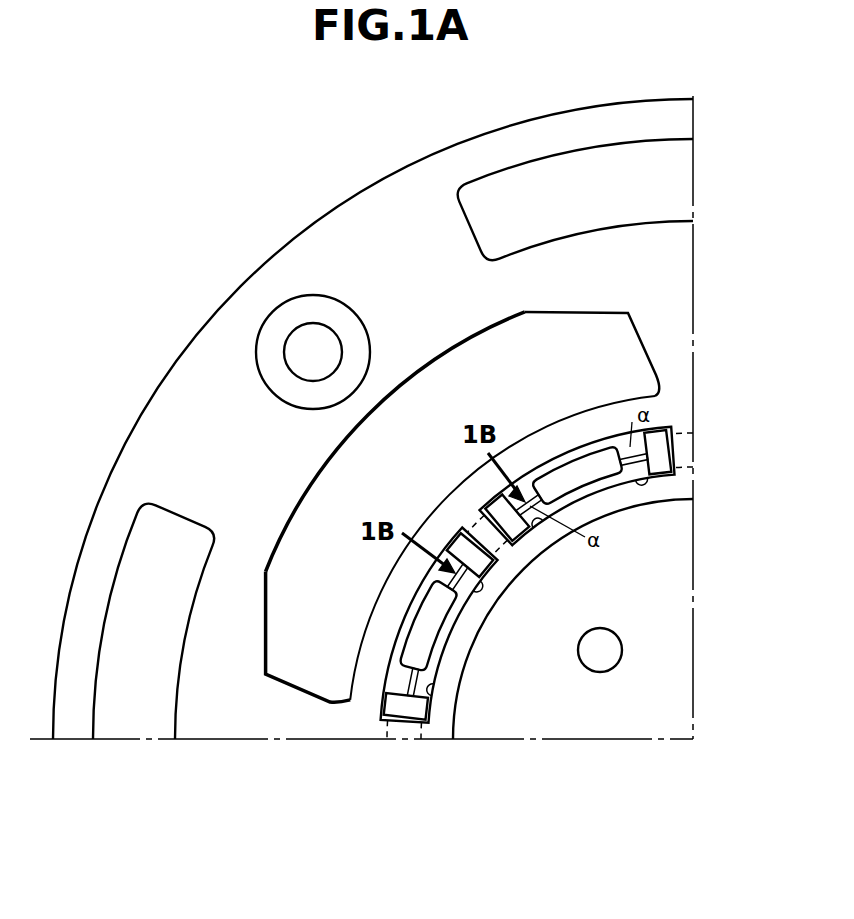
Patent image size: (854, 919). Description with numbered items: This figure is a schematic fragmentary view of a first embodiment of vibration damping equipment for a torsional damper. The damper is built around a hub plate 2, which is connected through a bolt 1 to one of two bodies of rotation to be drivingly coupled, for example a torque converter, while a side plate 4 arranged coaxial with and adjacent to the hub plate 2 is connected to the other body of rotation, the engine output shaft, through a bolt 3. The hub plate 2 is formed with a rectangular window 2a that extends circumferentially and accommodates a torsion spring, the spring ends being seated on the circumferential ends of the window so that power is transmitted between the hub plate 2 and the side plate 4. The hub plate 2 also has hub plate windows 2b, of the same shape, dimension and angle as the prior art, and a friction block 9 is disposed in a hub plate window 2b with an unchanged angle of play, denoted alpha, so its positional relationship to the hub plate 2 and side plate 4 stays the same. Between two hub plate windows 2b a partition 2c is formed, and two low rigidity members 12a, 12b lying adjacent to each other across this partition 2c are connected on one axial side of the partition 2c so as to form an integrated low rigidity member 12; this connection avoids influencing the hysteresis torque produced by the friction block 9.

The bolt 1 is at (301, 337).
The hub plate 2 is at (507, 152).
The rectangular window 2a is at (442, 361).
The hub plate window 2b is at (641, 470).
The partition 2c is at (503, 545).
The bolt 3 is at (610, 656).
The side plate 4 is at (648, 636).
The friction block 9 is at (597, 468).
The integrated low rigidity member 12 is at (490, 572).
The low rigidity member 12a is at (523, 525).
The low rigidity member 12b is at (657, 444).